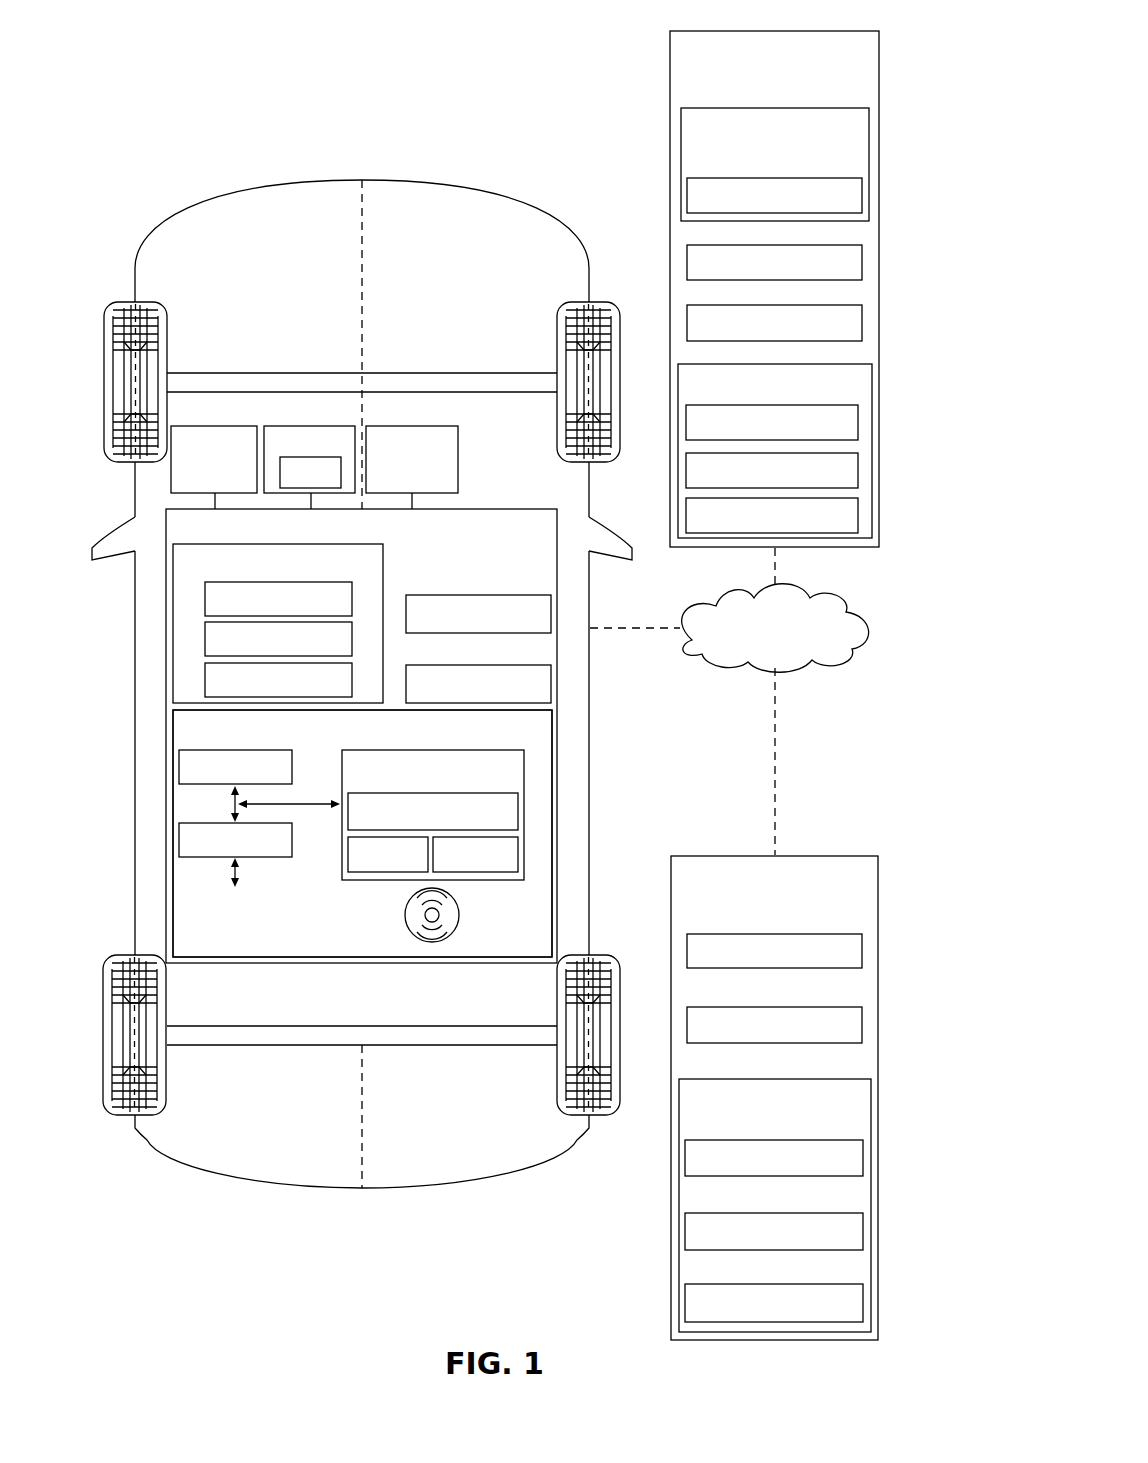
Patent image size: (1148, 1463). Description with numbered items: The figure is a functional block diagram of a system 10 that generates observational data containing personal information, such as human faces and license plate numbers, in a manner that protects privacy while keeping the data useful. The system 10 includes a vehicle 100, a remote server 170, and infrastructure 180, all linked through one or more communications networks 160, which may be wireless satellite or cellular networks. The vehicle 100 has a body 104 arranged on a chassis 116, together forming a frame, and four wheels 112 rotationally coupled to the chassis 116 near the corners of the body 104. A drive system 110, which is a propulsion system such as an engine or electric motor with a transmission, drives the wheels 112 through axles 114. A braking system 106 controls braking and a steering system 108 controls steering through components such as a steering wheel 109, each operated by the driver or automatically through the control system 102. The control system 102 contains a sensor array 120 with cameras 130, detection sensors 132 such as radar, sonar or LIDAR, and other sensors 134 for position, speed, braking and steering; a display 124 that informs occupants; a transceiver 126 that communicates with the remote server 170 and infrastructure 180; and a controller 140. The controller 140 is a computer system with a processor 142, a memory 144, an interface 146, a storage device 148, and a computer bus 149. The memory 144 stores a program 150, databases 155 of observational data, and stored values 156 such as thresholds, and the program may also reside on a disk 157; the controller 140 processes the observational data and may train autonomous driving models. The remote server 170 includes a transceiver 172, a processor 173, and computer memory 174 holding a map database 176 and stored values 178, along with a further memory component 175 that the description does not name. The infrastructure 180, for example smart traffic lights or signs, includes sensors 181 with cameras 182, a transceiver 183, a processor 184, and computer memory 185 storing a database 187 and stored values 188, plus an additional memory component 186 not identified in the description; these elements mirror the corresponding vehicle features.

The system 10 is at (588, 166).
The vehicle 100 is at (237, 208).
The control system 102 is at (560, 510).
The body 104 is at (136, 590).
The braking system 106 is at (238, 426).
The steering system 108 is at (332, 426).
The steering wheel 109 is at (412, 453).
The drive system 110 is at (342, 470).
The wheels 112 is at (134, 301).
The axles 114 is at (247, 381).
The chassis 116 is at (370, 226).
The sensor array 120 is at (175, 548).
The display 124 is at (553, 612).
The transceiver 126 is at (553, 683).
The cameras 130 is at (205, 592).
The detection sensors 132 is at (205, 640).
The other sensors 134 is at (205, 682).
The controller 140 is at (175, 735).
The processor 142 is at (180, 766).
The memory 144 is at (524, 770).
The interface 146 is at (180, 840).
The storage device 148 is at (178, 905).
The computer bus 149 is at (236, 804).
The program 150 is at (518, 805).
The databases 155 is at (389, 857).
The stored values 156 is at (518, 850).
The disk 157 is at (460, 916).
The communications networks 160 is at (813, 596).
The remote server 170 is at (815, 856).
The transceivers 172 is at (862, 950).
The processors 173 is at (862, 1025).
The computer memory 174 is at (871, 1107).
The database 175 is at (863, 1158).
The map database 176 is at (863, 1232).
The stored values 178 is at (863, 1305).
The infrastructure 180 is at (813, 31).
The sensors 181 is at (870, 137).
The cameras 182 is at (862, 196).
The transceivers 183 is at (862, 261).
The processors 184 is at (862, 322).
The computer memory 185 is at (872, 386).
The application 186 is at (858, 424).
The database 187 is at (858, 470).
The stored values 188 is at (858, 514).